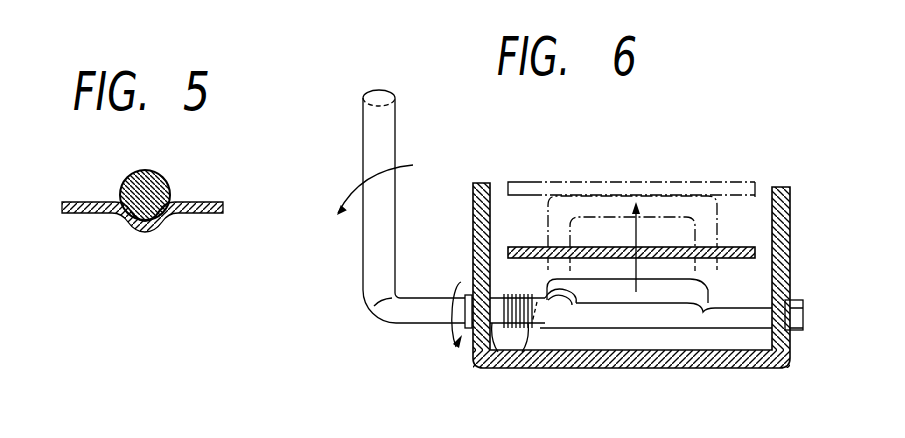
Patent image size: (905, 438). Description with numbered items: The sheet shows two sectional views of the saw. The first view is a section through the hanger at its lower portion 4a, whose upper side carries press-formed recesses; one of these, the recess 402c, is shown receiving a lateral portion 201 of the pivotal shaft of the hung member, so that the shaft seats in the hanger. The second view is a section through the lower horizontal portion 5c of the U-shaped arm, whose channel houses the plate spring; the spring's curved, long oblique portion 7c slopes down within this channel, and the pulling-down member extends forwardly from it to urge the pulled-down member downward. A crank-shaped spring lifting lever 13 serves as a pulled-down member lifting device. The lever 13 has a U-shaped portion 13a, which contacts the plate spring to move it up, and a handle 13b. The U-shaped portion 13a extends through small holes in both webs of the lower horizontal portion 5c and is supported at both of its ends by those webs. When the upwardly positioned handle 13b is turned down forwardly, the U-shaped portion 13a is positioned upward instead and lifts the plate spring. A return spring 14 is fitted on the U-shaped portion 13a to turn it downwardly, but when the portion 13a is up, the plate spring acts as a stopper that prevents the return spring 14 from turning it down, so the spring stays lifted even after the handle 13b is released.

In FIG. 5, the lateral portion 201 is at (157, 177).
In FIG. 5, the lower portion 4a is at (83, 214).
In FIG. 5, the recess 402c is at (165, 230).
In FIG. 6, the spring lifting lever 13 is at (353, 254).
In FIG. 6, the U-shaped portion 13a is at (658, 293).
In FIG. 6, the handle 13b is at (387, 134).
In FIG. 6, the return spring 14 is at (535, 368).
In FIG. 6, the long oblique portion 7c is at (652, 247).
In FIG. 6, the lower horizontal portion 5c is at (775, 185).